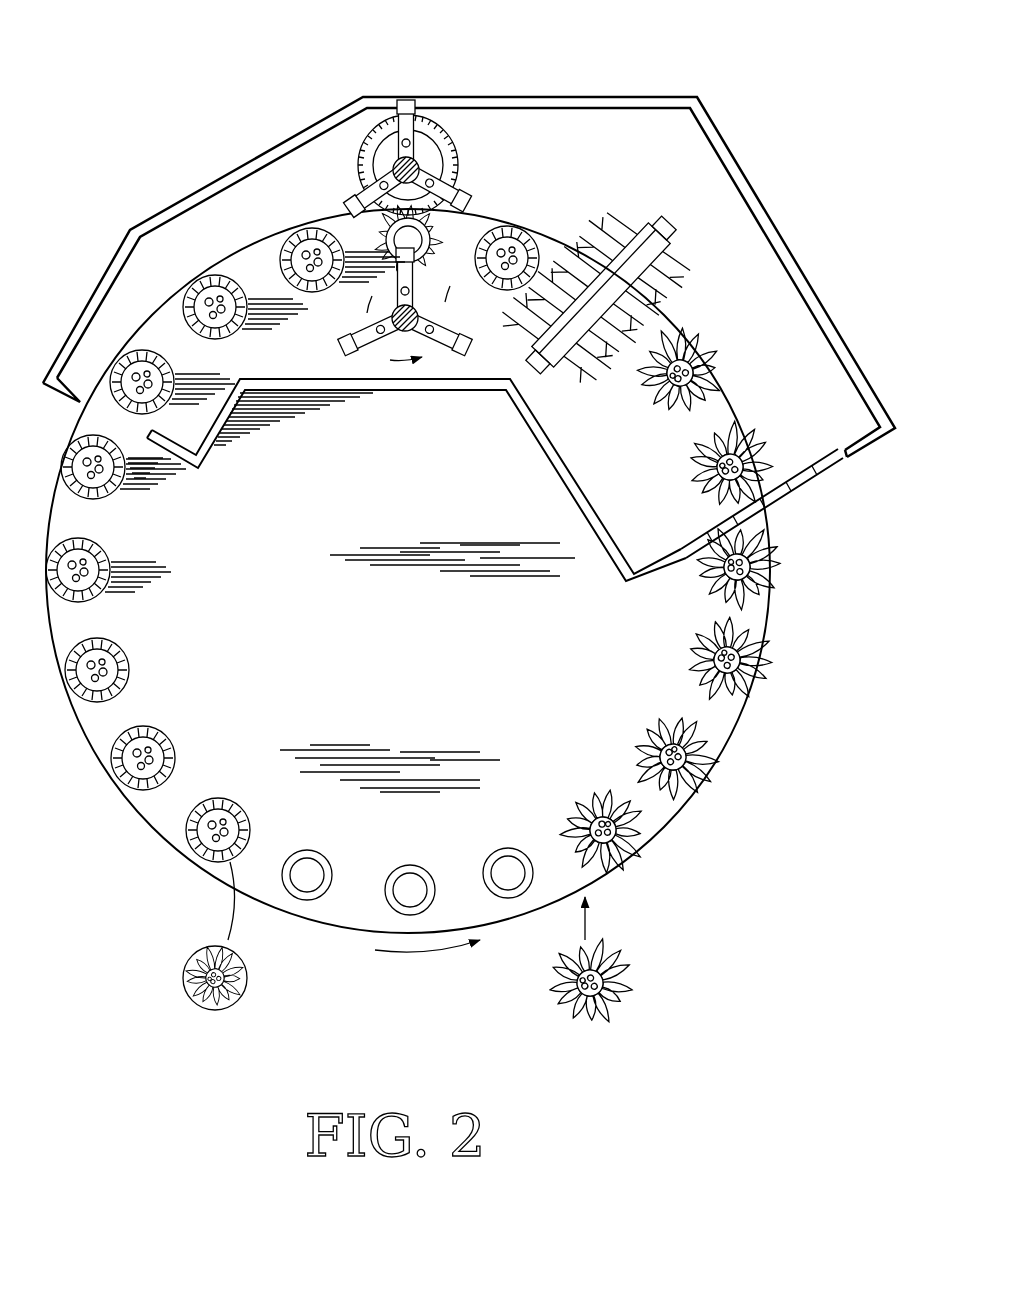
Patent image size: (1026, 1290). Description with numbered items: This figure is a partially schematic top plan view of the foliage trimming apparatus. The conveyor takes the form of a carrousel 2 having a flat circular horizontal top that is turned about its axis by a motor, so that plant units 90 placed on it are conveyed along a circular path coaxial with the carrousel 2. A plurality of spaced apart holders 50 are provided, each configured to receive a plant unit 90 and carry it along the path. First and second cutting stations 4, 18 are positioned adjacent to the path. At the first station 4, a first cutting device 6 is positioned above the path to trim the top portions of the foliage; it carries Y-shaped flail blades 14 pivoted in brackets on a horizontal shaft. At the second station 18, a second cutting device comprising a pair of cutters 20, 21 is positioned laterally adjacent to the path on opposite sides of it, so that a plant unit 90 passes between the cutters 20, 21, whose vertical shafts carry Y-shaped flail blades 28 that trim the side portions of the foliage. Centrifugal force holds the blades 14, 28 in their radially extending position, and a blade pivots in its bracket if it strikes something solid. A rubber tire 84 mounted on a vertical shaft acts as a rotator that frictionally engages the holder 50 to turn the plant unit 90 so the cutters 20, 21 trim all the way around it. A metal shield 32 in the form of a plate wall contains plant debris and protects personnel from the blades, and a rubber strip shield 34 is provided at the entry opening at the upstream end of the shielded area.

The carrousel 2 is at (752, 737).
The first cutting station 4 is at (634, 271).
The first cutting device 6 is at (657, 253).
The Y-shaped flail blade 14 is at (615, 271).
The second cutting station 18 is at (483, 140).
The cutter 20 is at (375, 130).
The cutter 21 is at (391, 327).
The Y-shaped flail blade 28 is at (358, 345).
The metal shield 32 is at (557, 473).
The rubber strip shield 34 is at (837, 463).
The holder 50 is at (490, 853).
The rubber tire 84 is at (357, 150).
The plant unit 90 is at (217, 1018).